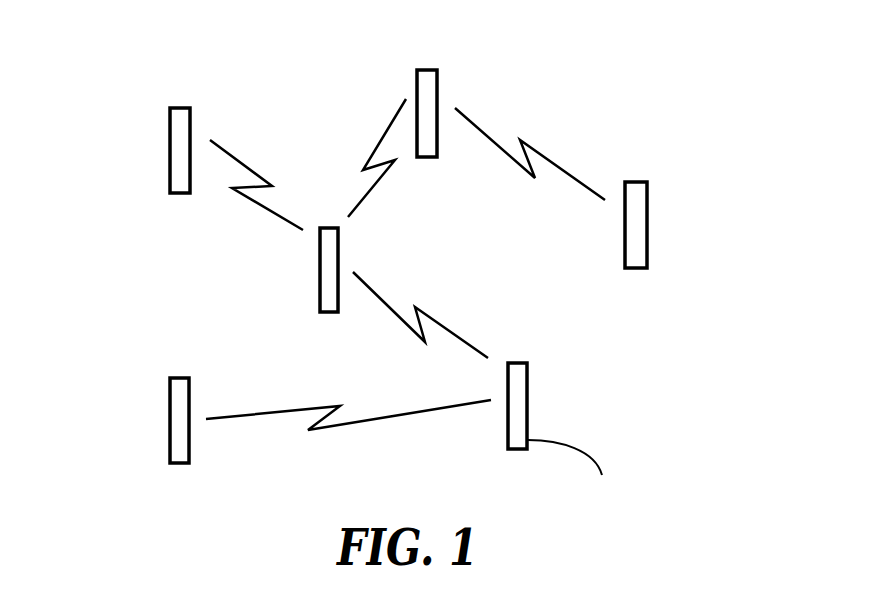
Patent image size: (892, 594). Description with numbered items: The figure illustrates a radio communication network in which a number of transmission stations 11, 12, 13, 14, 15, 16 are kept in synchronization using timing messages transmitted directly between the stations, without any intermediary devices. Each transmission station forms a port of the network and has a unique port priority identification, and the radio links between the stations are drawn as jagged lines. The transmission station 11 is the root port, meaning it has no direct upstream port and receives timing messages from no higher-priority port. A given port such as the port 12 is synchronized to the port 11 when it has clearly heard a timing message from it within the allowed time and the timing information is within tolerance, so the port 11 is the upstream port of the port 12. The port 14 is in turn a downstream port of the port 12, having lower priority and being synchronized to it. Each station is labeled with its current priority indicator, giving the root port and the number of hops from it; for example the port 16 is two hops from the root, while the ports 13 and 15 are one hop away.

The transmission station 11 is at (527, 409).
The transmission station 12 is at (320, 298).
The transmission station 13 is at (170, 406).
The transmission station 14 is at (170, 149).
The transmission station 15 is at (704, 200).
The transmission station 16 is at (495, 63).